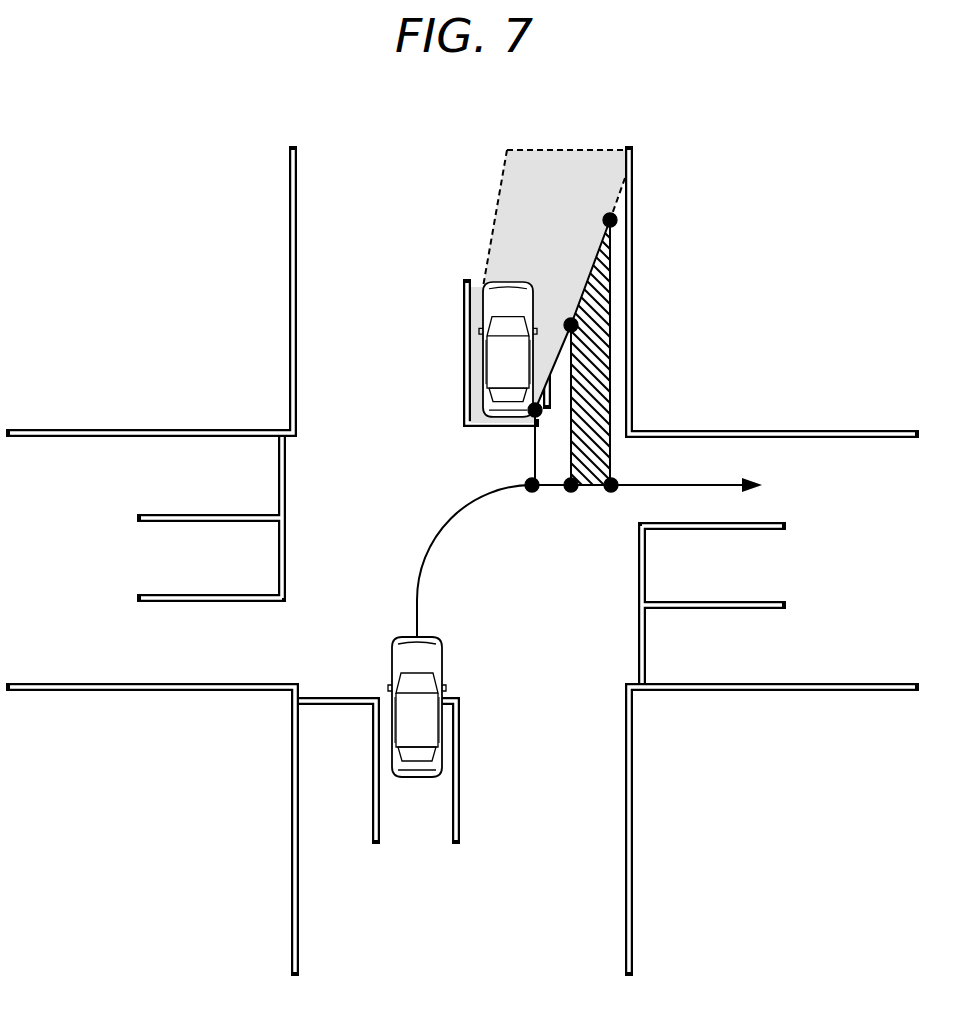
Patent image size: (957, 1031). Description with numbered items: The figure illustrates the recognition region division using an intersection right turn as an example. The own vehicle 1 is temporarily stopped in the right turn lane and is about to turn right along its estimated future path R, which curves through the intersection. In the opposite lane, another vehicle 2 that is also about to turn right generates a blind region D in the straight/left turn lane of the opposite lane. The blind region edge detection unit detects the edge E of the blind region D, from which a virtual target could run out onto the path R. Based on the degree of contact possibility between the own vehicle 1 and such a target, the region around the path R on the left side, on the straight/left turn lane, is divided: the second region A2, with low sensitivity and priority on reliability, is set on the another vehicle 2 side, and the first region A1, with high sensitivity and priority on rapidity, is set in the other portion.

The own vehicle 1 is at (418, 652).
The another vehicle 2 is at (505, 412).
The blind region D is at (505, 237).
The edge of blind region E is at (617, 200).
The path R is at (432, 540).
The first region A1 is at (597, 477).
The second region A2 is at (555, 475).